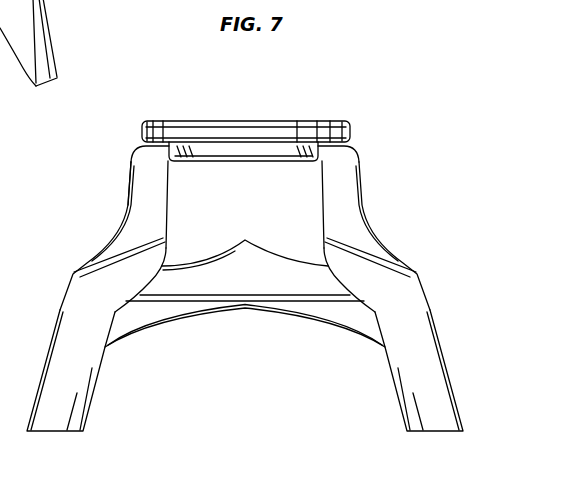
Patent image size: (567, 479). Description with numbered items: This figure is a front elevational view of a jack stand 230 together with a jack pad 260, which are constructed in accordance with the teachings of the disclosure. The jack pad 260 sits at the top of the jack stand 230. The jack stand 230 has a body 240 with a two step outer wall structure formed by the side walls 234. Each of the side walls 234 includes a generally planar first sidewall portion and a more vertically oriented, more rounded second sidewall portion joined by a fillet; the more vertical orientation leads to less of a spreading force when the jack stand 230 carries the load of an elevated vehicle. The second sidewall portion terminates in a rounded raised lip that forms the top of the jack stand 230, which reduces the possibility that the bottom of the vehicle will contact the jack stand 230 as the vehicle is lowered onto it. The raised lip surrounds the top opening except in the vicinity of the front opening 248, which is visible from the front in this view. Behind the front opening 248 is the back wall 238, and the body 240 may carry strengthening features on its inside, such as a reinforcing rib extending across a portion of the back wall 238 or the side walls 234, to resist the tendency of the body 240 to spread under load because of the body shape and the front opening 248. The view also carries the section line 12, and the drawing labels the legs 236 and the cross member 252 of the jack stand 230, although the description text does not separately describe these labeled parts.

The section line 12- 12 is at (275, 82).
The jack stand 230 is at (380, 176).
The side walls 234 is at (32, 33).
The legs 236 is at (80, 325).
The back wall 238 is at (268, 213).
The body 240 is at (92, 196).
The front opening 248 is at (177, 205).
The cross member 252 is at (162, 373).
The jack pad 260 is at (303, 101).